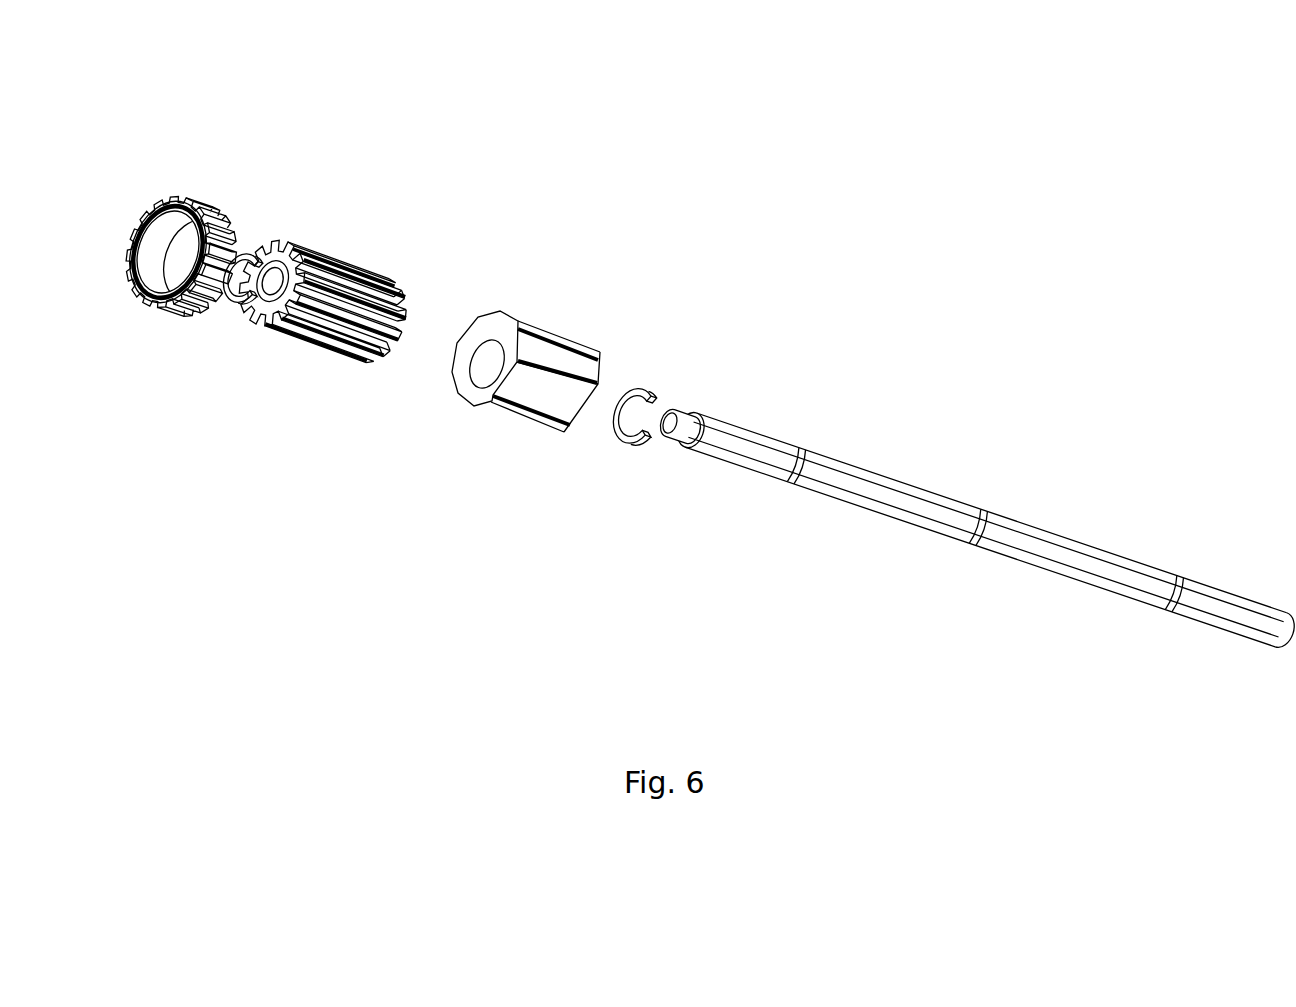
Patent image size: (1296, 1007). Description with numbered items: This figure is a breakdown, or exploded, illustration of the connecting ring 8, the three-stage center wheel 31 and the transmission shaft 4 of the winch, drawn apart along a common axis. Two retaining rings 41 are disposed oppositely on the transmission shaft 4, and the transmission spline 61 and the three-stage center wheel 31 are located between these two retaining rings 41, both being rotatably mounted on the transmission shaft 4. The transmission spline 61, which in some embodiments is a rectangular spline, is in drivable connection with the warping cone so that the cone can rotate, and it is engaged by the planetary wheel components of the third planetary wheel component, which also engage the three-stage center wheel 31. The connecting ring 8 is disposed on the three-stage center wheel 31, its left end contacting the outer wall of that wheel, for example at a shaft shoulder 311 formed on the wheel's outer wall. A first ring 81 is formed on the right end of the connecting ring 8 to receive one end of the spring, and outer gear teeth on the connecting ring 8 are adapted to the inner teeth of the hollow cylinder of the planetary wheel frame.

The transmission shaft 4 is at (957, 500).
The connecting ring 8 is at (168, 266).
The first ring 81 is at (177, 194).
The three-stage center wheel 31 is at (322, 304).
The shaft shoulder 311 is at (347, 267).
The retaining rings 41 is at (228, 306).
The transmission spline 61 is at (563, 337).